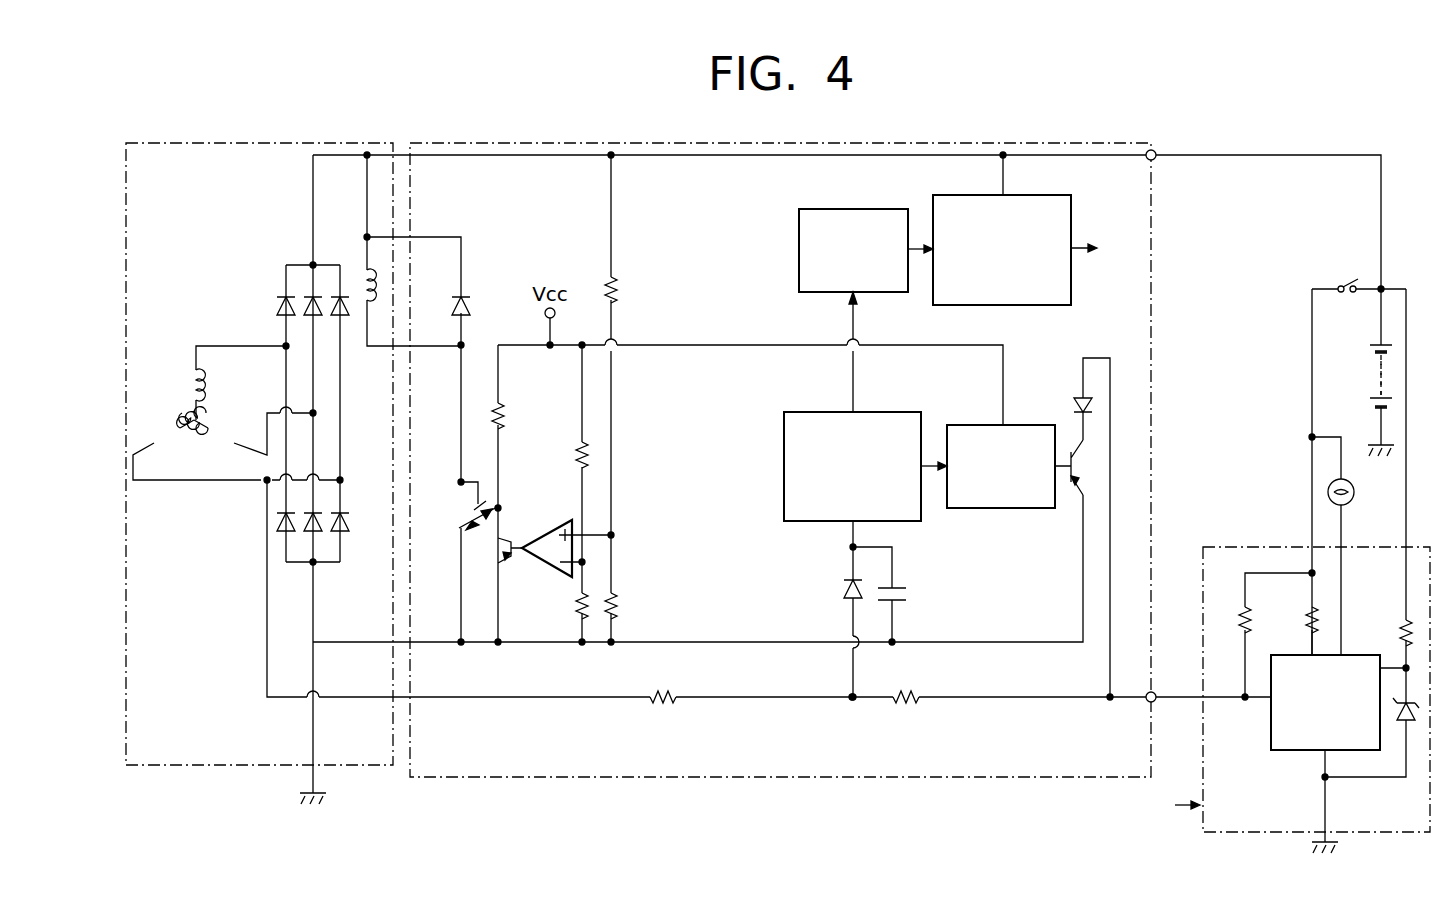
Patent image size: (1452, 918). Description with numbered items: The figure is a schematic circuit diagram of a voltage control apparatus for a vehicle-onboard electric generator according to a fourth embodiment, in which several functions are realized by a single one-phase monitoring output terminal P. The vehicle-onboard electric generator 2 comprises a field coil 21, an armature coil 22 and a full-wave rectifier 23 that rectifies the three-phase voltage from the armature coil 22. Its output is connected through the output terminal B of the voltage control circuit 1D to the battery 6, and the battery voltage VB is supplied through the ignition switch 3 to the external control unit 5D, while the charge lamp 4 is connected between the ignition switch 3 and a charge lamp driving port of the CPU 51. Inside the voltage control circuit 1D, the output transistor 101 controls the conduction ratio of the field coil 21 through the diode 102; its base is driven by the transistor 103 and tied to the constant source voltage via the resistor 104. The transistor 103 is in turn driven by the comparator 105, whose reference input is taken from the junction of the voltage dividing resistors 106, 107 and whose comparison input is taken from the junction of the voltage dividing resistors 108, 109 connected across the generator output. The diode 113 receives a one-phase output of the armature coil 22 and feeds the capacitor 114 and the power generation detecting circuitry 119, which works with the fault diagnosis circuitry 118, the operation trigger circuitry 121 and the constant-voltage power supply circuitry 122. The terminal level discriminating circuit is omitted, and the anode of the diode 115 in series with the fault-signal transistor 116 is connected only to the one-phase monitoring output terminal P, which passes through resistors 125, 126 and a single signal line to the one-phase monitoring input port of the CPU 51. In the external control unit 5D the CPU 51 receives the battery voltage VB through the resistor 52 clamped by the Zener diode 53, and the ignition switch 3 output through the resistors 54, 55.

The vehicle-onboard electric generator 2 is at (193, 765).
The ignition switch 3 is at (1344, 284).
The charge lamp 4 is at (1354, 495).
The battery 6 is at (1376, 380).
The field coil 21 is at (364, 280).
The armature coil 22 is at (190, 380).
The full-wave rectifier 23 is at (305, 345).
The CPU 51 is at (1345, 652).
The resistor 52 is at (1397, 624).
The Zener diode 53 is at (1410, 724).
The resistor 54 is at (1309, 614).
The resistor 55 is at (1242, 607).
The output transistor 101 is at (486, 504).
The diode 102 is at (470, 302).
The transistor 103 is at (514, 570).
The resistor 104 is at (498, 384).
The comparator 105 is at (539, 571).
The voltage dividing resistor 106 is at (584, 446).
The voltage dividing resistor 107 is at (582, 620).
The voltage dividing resistor 108 is at (602, 288).
The voltage dividing resistor 109 is at (611, 636).
The diode 113 is at (840, 592).
The capacitor 114 is at (910, 594).
The diode 115 is at (1078, 392).
The transistor 116 is at (1076, 486).
The fault diagnosis circuitry 118 is at (1022, 425).
The power generation detecting circuitry 119 is at (888, 412).
The operation trigger circuitry 121 is at (846, 209).
The constant-voltage power supply circuitry 122 is at (1036, 195).
The resistor 125 is at (906, 692).
The resistor 126 is at (664, 692).
The voltage control circuit 1D is at (780, 778).
The external control unit 5D is at (1202, 835).
The output terminal B is at (1155, 160).
The one-phase monitoring output terminal P is at (1154, 690).
The battery voltage VB is at (1378, 321).